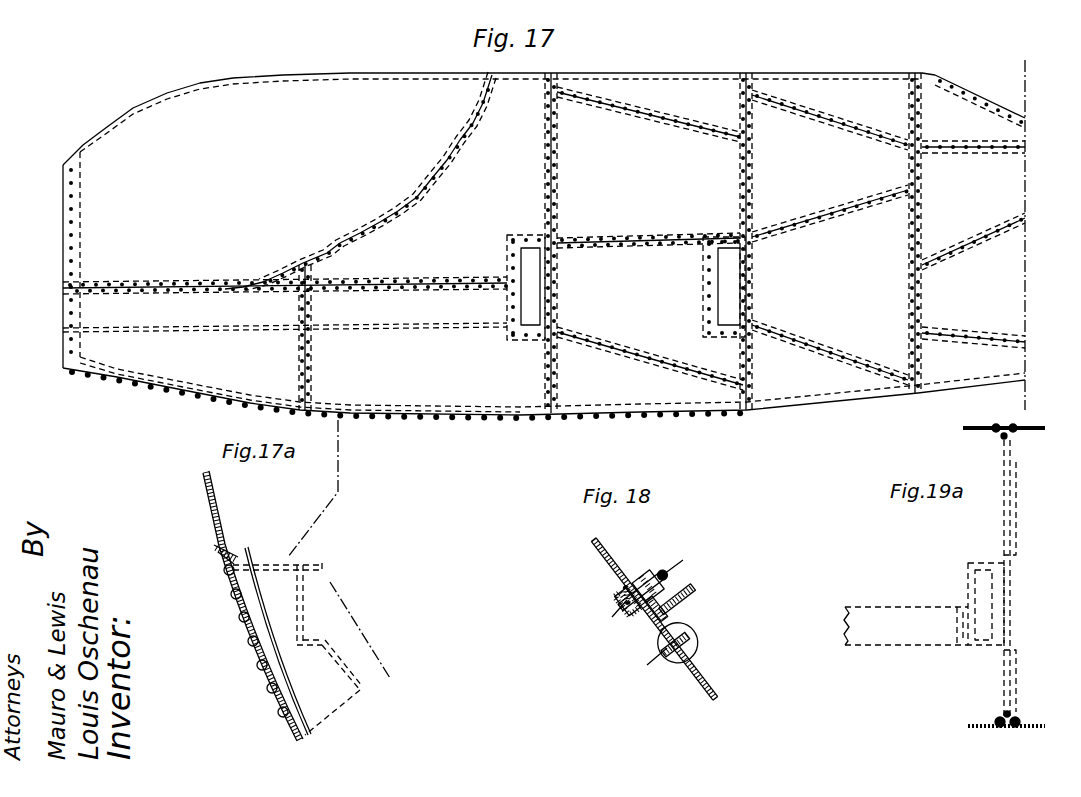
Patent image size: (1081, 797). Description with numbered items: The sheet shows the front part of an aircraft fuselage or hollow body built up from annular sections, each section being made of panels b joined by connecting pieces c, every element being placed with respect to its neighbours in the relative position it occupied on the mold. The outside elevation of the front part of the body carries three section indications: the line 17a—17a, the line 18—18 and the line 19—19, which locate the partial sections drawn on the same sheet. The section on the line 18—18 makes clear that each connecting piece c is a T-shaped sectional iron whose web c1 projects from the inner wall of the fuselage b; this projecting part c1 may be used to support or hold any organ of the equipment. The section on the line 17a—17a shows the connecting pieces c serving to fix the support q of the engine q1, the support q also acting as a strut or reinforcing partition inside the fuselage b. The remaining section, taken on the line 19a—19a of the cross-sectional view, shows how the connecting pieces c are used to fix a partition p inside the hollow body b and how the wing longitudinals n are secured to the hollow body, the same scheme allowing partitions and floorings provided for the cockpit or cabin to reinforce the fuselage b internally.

In FIG. 17, the section line 17a— 17a is at (286, 70).
In FIG. 17, the section line 19— 19 is at (521, 80).
In FIG. 17, the section line 18— 18 is at (357, 197).
In FIG. 17, the fuselage panel b is at (499, 127).
In FIG. 17A, the fuselage panel b is at (214, 505).
In FIG. 18, the fuselage panel b is at (605, 560).
In FIG. 19A, the fuselage panel b is at (984, 428).
In FIG. 17A, the connecting piece c is at (237, 558).
In FIG. 18, the connecting piece c is at (683, 623).
In FIG. 19A, the connecting piece c is at (1013, 432).
In FIG. 18, the web of connecting piece c1 is at (690, 583).
In FIG. 17A, the engine support q is at (297, 641).
In FIG. 17A, the engine q1 is at (334, 478).
In FIG. 19A, the partition p is at (1010, 455).
In FIG. 19A, the wing longitudinal n is at (985, 582).